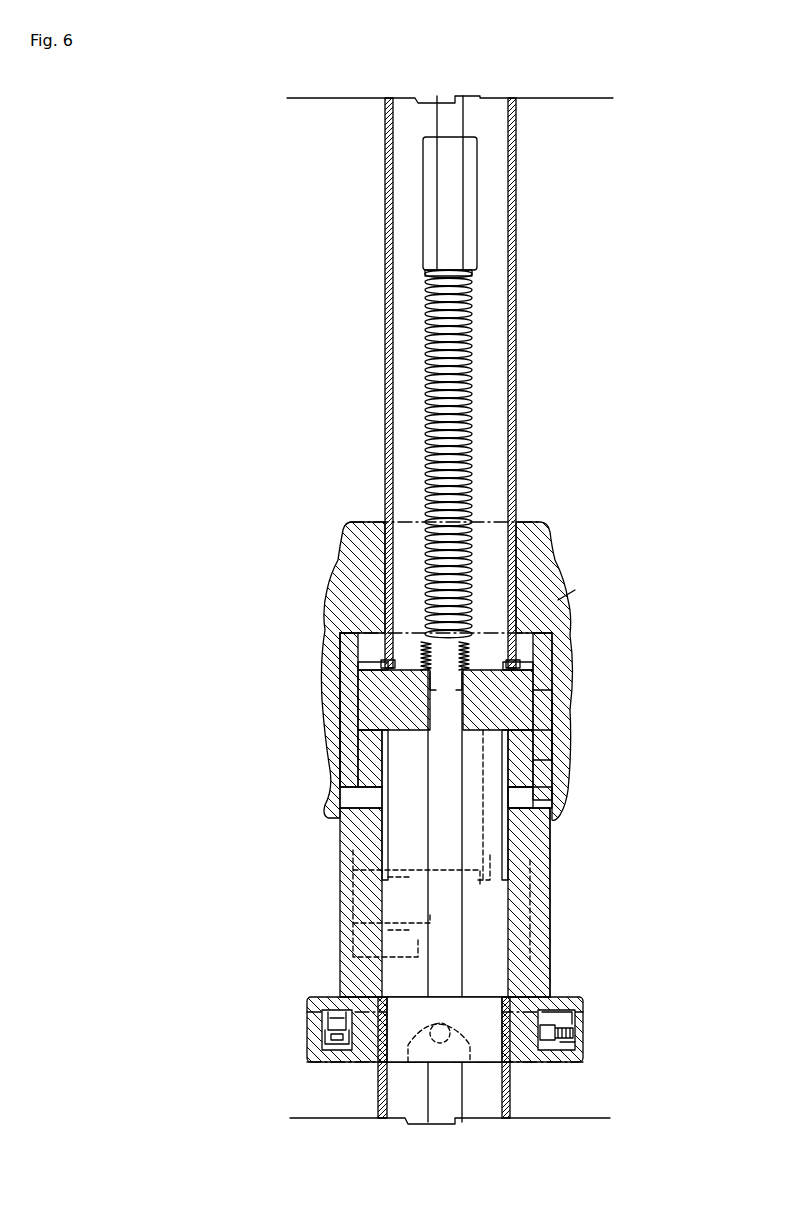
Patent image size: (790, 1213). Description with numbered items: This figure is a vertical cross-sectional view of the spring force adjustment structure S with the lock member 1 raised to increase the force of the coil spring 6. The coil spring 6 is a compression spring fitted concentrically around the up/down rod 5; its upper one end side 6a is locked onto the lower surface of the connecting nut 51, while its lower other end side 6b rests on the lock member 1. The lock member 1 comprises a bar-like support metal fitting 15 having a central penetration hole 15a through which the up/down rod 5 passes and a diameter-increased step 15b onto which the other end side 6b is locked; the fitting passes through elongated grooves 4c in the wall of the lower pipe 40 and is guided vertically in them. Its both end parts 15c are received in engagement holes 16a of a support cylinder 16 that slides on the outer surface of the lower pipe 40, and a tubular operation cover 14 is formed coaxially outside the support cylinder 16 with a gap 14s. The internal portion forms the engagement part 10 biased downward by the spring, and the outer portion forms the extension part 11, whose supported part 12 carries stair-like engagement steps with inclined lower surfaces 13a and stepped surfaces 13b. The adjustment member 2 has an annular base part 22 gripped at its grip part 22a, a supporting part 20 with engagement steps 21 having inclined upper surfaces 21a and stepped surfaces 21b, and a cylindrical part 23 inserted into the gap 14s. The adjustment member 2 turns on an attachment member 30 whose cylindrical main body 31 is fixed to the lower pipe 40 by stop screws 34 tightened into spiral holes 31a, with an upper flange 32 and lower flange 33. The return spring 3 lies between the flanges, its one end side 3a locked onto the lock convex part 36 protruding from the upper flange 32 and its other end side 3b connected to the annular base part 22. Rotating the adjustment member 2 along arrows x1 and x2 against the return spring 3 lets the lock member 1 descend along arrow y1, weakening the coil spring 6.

The lock member 1 is at (548, 530).
The adjustment member 2 is at (553, 902).
The return spring 3 is at (562, 1022).
The one end side of return spring 3a is at (345, 1062).
The other end side of return spring 3b is at (556, 1062).
The elongated grooves 4c is at (540, 770).
The up/down rod 5 is at (465, 122).
The coil spring 6 is at (470, 352).
The one end side of coil spring 6a is at (458, 274).
The other end side of coil spring 6b is at (430, 690).
The engagement part 10 is at (540, 672).
The extension part 11 is at (560, 597).
The supported part 12 is at (480, 800).
The lower surfaces of engagement steps 13a is at (350, 714).
The stepped surfaces of engagement steps 13b is at (415, 735).
The operation cover 14 is at (556, 690).
The gap 14s is at (545, 745).
The support metal fitting 15 is at (358, 672).
The penetration hole 15a is at (424, 650).
The diameter-increased step 15b is at (466, 650).
The end parts of support metal fitting 15c is at (545, 702).
The support cylinder 16 is at (540, 780).
The engagement holes 16a is at (540, 735).
The supporting part 20 is at (355, 930).
The engagement steps of adjustment member 21 is at (355, 902).
The upper surfaces of engagement steps 21a is at (355, 853).
The stepped surfaces of engagement steps 21b is at (355, 877).
The annular base part 22 is at (568, 997).
The grip part 22a is at (578, 1048).
The cylindrical part 23 is at (553, 928).
The attachment member 30 is at (515, 1050).
The cylindrical main body 31 is at (375, 1045).
The spiral holes 31a is at (468, 1050).
The upper flange 32 is at (331, 1012).
The lower flange 33 is at (333, 1062).
The stop screws 34 is at (408, 1062).
The lock convex part 36 is at (330, 1030).
The lower pipe 40 is at (516, 203).
The connecting nut 51 is at (432, 205).
The spring force adjustment structure S is at (572, 425).
The arrow x1 is at (288, 983).
The arrow x2 is at (473, 903).
The arrow y1 is at (290, 730).